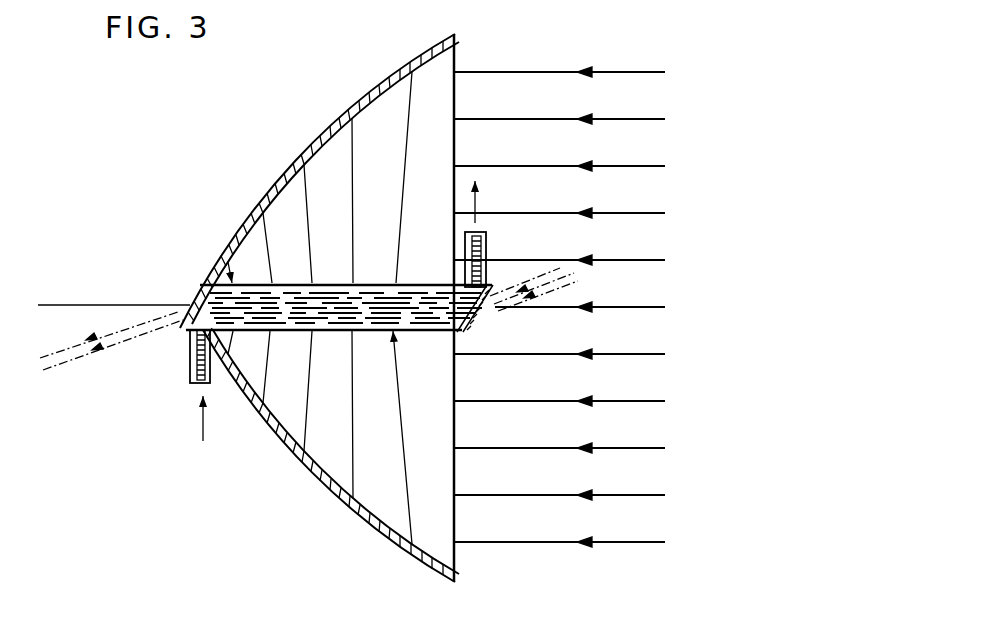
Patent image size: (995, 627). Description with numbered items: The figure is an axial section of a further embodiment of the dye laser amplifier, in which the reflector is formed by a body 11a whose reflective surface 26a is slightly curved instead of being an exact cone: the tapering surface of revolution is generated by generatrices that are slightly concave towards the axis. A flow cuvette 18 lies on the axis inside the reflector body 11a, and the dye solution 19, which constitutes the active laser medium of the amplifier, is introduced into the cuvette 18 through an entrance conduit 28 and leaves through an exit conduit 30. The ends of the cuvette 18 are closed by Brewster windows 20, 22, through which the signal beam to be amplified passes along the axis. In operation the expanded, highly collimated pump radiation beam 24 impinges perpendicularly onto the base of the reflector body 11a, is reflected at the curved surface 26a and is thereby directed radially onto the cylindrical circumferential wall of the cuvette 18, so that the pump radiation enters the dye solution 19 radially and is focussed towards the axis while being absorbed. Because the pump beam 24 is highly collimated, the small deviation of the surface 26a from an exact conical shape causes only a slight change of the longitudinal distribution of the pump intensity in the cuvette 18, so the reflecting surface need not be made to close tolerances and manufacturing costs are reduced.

The conical body 11a is at (368, 96).
The flow cuvette 18 is at (288, 288).
The dye solution 19 is at (203, 430).
The Brewster window 20 is at (200, 292).
The Brewster window 22 is at (473, 315).
The expanded beam 24 is at (627, 532).
The slightly curved reflective surface 26a is at (446, 50).
The entrance conduit 28 is at (190, 366).
The exit conduit 30 is at (487, 243).